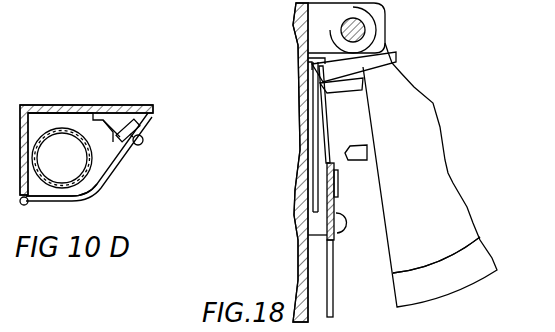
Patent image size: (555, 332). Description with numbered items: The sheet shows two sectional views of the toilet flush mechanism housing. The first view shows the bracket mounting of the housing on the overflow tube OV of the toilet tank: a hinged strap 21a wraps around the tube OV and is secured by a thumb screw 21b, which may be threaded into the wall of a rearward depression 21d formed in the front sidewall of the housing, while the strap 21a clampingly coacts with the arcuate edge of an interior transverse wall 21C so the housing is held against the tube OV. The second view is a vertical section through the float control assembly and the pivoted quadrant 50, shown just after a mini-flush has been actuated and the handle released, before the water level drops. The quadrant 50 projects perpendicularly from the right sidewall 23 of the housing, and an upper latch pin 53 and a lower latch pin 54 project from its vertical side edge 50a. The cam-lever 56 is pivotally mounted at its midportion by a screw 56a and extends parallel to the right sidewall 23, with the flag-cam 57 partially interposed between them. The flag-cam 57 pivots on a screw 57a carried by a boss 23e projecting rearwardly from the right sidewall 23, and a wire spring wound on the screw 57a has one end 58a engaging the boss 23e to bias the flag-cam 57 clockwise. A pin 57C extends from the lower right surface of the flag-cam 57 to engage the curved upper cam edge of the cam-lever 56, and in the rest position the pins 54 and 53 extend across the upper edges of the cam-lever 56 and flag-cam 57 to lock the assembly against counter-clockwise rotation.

In FIG. 10D, the interior transverse wall 21C is at (46, 123).
In FIG. 10D, the hinged strap 21a is at (104, 161).
In FIG. 10D, the rearward depression 21d is at (128, 125).
In FIG. 10D, the thumb screw 21b is at (143, 139).
In FIG. 10D, the overflow tube OV is at (77, 186).
In FIG. 18, the right sidewall 23 is at (300, 247).
In FIG. 18, the boss 23e is at (310, 108).
In FIG. 18, the pivoted quadrant 50 is at (447, 228).
In FIG. 18, the vertical side edge 50a is at (389, 264).
In FIG. 18, the upper latch pin 53 is at (352, 88).
In FIG. 18, the lower latch pin 54 is at (367, 152).
In FIG. 18, the cam-lever 56 is at (333, 300).
In FIG. 18, the screw 56a is at (337, 234).
In FIG. 18, the flag-cam 57 is at (318, 160).
In FIG. 18, the screw 57a is at (328, 112).
In FIG. 18, the pin 57C is at (327, 197).
In FIG. 18, the spring end 58a is at (360, 63).